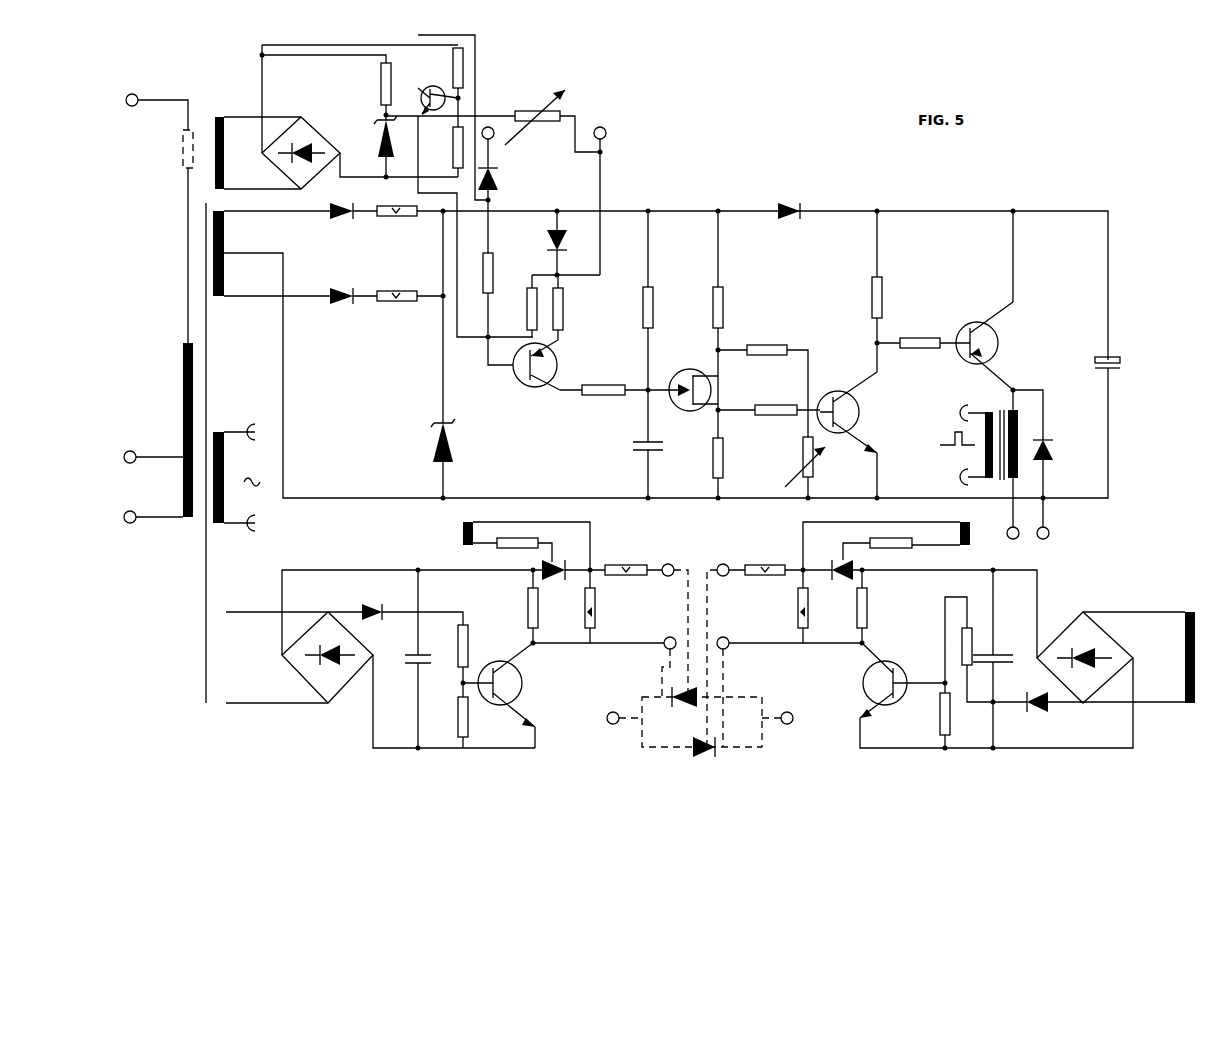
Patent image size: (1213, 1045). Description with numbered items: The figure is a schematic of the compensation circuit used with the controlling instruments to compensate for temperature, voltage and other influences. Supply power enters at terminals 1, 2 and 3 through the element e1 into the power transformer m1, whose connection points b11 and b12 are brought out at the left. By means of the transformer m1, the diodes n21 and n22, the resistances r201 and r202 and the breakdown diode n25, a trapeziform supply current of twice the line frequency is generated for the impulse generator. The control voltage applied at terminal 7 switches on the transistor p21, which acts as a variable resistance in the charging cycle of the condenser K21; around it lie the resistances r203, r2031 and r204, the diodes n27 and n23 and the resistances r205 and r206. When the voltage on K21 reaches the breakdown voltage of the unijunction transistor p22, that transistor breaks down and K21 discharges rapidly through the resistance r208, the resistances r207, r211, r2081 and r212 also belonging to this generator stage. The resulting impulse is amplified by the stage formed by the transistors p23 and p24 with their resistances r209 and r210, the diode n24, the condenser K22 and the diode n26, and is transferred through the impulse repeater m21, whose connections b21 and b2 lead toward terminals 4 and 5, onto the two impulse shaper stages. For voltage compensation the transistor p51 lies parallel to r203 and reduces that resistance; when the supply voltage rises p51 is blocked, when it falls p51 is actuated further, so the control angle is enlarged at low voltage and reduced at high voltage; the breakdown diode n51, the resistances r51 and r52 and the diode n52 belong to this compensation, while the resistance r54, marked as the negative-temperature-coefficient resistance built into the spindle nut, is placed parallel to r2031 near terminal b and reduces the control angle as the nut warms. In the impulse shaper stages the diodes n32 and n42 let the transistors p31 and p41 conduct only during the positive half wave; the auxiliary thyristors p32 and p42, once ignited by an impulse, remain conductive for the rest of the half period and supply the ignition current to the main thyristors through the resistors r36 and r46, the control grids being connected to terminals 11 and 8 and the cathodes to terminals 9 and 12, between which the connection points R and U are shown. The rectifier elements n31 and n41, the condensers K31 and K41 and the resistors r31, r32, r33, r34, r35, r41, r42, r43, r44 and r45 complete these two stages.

The input terminal 1 is at (121, 101).
The input terminal 2 is at (119, 458).
The input terminal 3 is at (119, 518).
The output terminal 4 is at (1013, 543).
The output terminal 5 is at (1043, 543).
The terminal 7 is at (494, 133).
The terminal 8 is at (668, 559).
The terminal 9 is at (669, 633).
The terminal 11 is at (725, 559).
The terminal 12 is at (724, 633).
The terminal b is at (600, 123).
The terminal R is at (612, 709).
The terminal U is at (786, 709).
The fuse e1 is at (163, 159).
The power transformer m1 is at (691, 374).
The impulse repeater m21 is at (725, 464).
The winding terminal b11 is at (257, 455).
The winding terminal b12 is at (255, 533).
The winding terminal b21 is at (956, 425).
The winding terminal b2 is at (954, 477).
The breakdown diode n51 is at (303, 149).
The resistor r51 is at (367, 84).
The zener diode n52 is at (374, 136).
The transistor p51 is at (428, 100).
The resistor r52 is at (442, 108).
The NTC resistor r54 is at (535, 114).
The diode n27 is at (511, 190).
The diode n23 is at (545, 233).
The diode n21 is at (334, 209).
The resistance r201 is at (397, 222).
The diode n22 is at (332, 294).
The resistance r202 is at (395, 294).
The resistance r203 is at (510, 271).
The resistance r2031 is at (503, 309).
The resistor r204 is at (582, 305).
The transistor p21 is at (539, 373).
The resistor r205 is at (603, 391).
The breakdown diode n25 is at (464, 446).
The resistor r206 is at (670, 310).
The condenser K21 is at (664, 453).
The unijunction transistor p22 is at (715, 395).
The resistor r207 is at (742, 307).
The resistor r211 is at (787, 340).
The resistor r2081 is at (773, 410).
The resistance r208 is at (740, 461).
The potentiometer r212 is at (823, 467).
The transistor p23 is at (870, 398).
The resistor r209 is at (894, 297).
The resistor r210 is at (920, 342).
The transistor p24 is at (1009, 346).
The capacitor K22 is at (1127, 368).
The diode n24 is at (798, 209).
The diode n26 is at (1062, 445).
The bridge rectifier n31 is at (314, 670).
The diode n32 is at (382, 613).
The capacitor K31 is at (415, 670).
The resistor r31 is at (480, 641).
The resistor r32 is at (455, 713).
The transistor p31 is at (526, 685).
The resistor r33 is at (535, 535).
The auxiliary thyristor p32 is at (608, 527).
The resistor r34 is at (539, 608).
The resistor r35 is at (607, 610).
The resistor r36 is at (628, 569).
The resistor r46 is at (766, 568).
The auxiliary thyristor p42 is at (856, 554).
The resistor r43 is at (909, 535).
The resistor r45 is at (817, 611).
The resistor r44 is at (878, 608).
The transistor p41 is at (852, 680).
The resistor r42 is at (945, 714).
The resistor r41 is at (974, 637).
The capacitor K41 is at (1012, 659).
The diode n42 is at (1034, 719).
The bridge rectifier n41 is at (1087, 642).